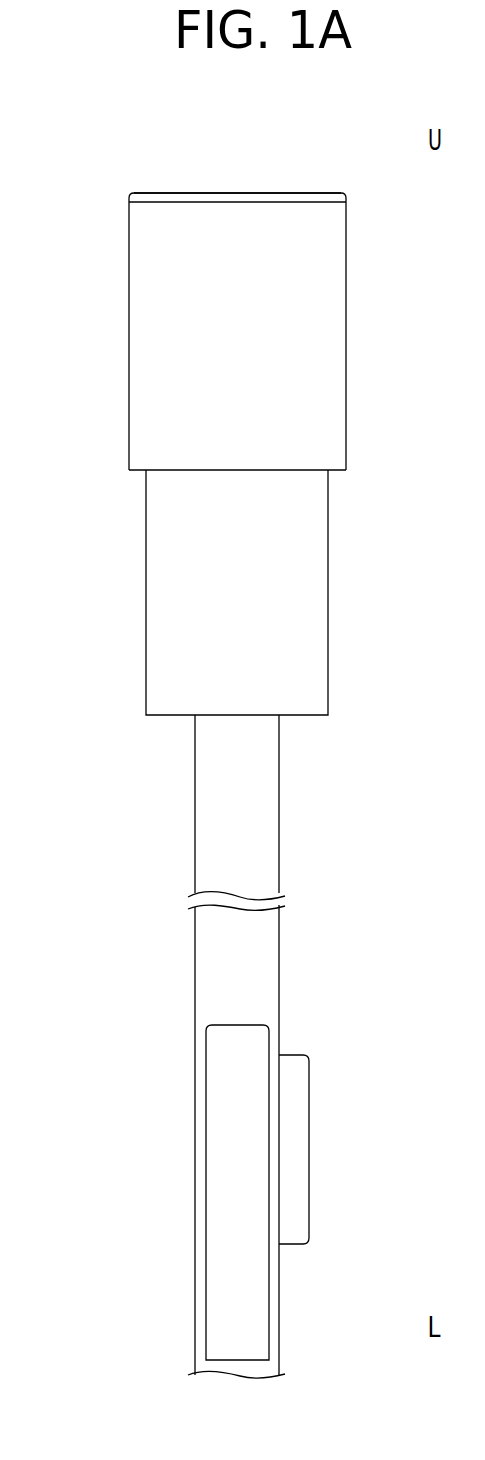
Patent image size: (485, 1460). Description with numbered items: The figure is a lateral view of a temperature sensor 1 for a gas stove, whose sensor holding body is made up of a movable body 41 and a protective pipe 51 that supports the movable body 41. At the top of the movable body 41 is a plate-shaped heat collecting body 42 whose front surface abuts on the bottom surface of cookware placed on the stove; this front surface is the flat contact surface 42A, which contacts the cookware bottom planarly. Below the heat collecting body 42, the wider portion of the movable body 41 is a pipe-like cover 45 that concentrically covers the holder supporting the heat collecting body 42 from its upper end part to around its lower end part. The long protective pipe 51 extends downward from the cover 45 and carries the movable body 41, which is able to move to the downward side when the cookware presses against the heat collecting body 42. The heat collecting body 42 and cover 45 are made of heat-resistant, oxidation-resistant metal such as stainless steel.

The temperature sensor 1 is at (328, 182).
The movable body 41 is at (86, 337).
The heat collecting body 42 is at (349, 200).
The contact surface 42A is at (222, 192).
The cover 45 is at (347, 452).
The protective pipe 51 is at (194, 858).